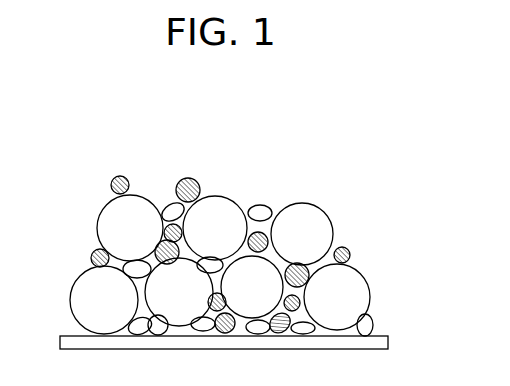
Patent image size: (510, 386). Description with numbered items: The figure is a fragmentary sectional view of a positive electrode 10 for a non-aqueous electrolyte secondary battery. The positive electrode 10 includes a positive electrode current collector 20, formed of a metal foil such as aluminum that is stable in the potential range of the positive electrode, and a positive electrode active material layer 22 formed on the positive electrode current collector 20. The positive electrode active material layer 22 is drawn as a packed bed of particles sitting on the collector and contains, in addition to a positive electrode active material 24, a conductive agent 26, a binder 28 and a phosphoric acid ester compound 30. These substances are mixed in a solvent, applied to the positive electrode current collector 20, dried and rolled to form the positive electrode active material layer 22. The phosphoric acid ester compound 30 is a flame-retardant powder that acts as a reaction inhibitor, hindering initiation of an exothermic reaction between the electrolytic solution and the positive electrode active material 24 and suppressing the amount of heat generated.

The positive electrode 10 is at (93, 162).
The positive electrode current collector 20 is at (388, 343).
The positive electrode active material layer 22 is at (388, 197).
The positive electrode active material 24 is at (311, 213).
The conductive agent 26 is at (262, 207).
The binder 28 is at (186, 178).
The phosphoric acid ester compound 30 is at (121, 176).